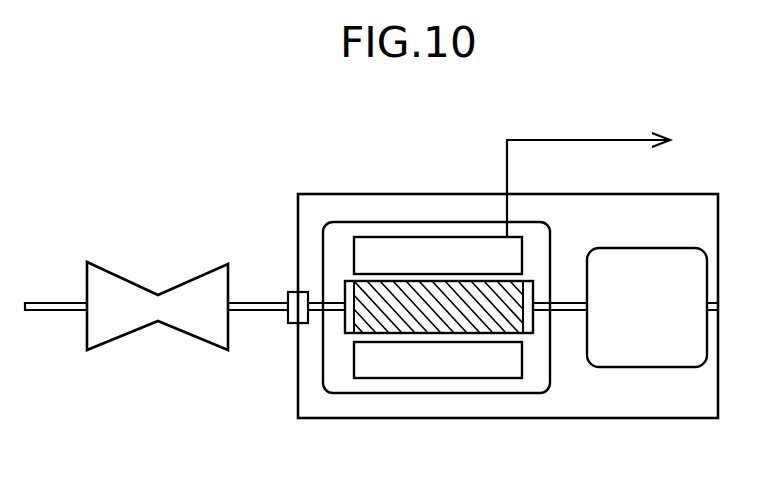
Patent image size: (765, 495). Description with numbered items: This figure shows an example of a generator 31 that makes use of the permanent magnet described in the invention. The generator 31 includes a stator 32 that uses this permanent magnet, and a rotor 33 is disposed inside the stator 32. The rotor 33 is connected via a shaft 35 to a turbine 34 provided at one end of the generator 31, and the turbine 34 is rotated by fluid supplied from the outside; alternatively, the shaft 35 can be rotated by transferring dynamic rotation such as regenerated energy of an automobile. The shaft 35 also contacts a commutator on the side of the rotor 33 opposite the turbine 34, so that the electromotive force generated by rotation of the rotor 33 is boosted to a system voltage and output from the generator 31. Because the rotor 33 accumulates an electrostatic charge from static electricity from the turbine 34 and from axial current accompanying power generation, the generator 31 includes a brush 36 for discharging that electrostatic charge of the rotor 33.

The generator 31 is at (343, 192).
The stator 32 is at (407, 368).
The rotor 33 is at (452, 325).
The turbine 34 is at (200, 277).
The shaft 35 is at (263, 312).
The brush 36 is at (637, 352).